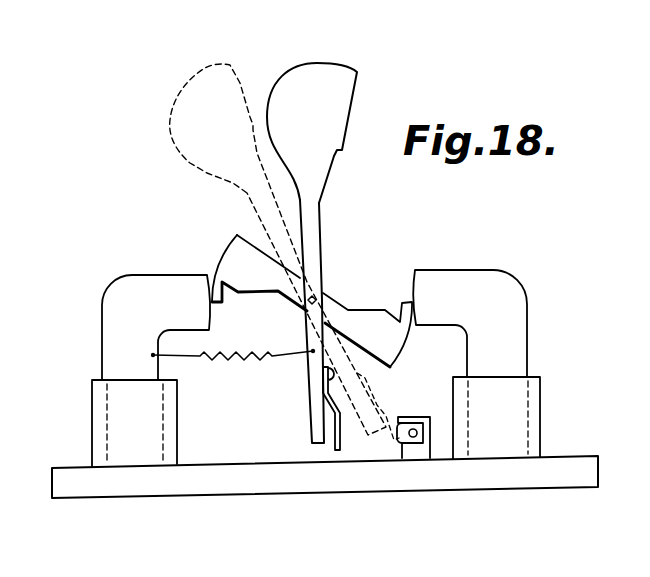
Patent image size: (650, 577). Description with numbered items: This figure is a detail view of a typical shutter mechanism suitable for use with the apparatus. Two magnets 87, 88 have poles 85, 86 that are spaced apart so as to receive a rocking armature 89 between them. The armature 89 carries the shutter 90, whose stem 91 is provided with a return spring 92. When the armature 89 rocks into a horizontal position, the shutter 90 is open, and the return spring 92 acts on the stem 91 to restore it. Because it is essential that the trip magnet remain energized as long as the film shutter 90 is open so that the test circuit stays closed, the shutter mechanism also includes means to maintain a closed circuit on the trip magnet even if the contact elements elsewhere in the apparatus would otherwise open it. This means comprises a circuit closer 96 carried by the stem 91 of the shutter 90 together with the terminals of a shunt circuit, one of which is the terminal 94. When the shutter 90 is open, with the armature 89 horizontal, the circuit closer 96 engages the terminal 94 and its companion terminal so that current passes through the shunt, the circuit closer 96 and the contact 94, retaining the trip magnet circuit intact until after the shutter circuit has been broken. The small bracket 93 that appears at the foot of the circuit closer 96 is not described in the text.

The pole 85 is at (112, 346).
The pole 86 is at (515, 339).
The magnet 87 is at (105, 433).
The magnet 88 is at (535, 421).
The rocking armature 89 is at (345, 310).
The shutter 90 is at (266, 253).
The stem 91 is at (311, 392).
The return spring 92 is at (236, 357).
The pivot bracket 93 is at (408, 421).
The terminal 94 is at (404, 446).
The circuit closer 96 is at (323, 448).